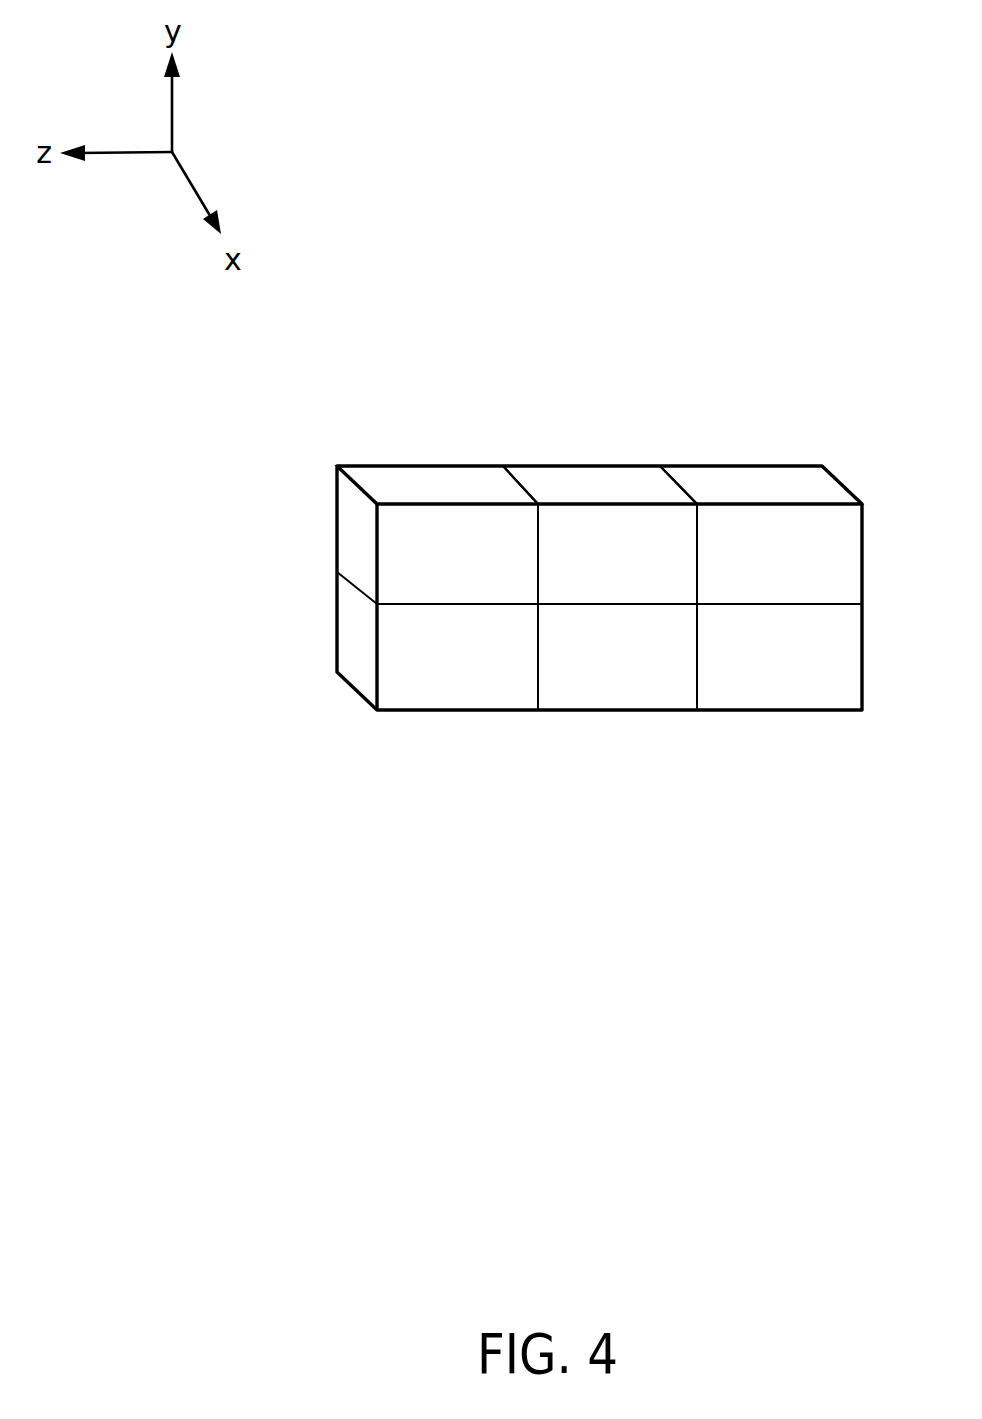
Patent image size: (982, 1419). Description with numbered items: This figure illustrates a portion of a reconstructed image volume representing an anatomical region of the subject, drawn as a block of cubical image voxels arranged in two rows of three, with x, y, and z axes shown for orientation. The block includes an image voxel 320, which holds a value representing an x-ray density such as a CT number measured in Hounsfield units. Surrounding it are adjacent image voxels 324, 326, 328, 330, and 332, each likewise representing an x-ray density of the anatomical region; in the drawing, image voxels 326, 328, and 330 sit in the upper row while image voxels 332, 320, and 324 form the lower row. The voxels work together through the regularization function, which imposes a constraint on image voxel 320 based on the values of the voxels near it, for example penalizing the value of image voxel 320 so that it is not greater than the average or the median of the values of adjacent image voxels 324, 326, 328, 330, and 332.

The image voxel 320 is at (627, 667).
The image voxel 324 is at (792, 667).
The image voxel 326 is at (758, 483).
The image voxel 328 is at (612, 483).
The image voxel 330 is at (446, 485).
The image voxel 332 is at (458, 667).